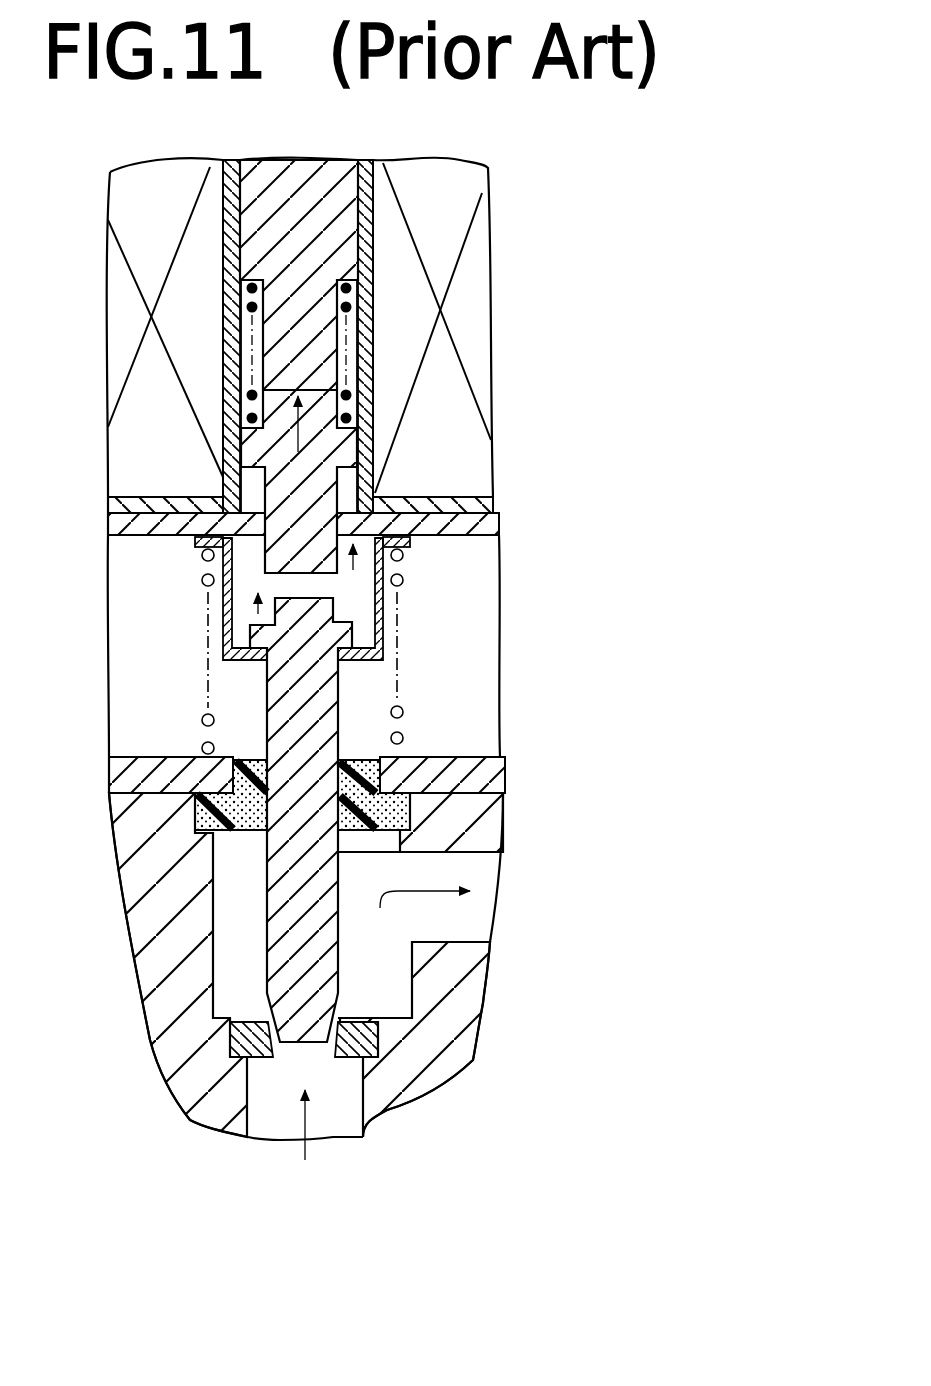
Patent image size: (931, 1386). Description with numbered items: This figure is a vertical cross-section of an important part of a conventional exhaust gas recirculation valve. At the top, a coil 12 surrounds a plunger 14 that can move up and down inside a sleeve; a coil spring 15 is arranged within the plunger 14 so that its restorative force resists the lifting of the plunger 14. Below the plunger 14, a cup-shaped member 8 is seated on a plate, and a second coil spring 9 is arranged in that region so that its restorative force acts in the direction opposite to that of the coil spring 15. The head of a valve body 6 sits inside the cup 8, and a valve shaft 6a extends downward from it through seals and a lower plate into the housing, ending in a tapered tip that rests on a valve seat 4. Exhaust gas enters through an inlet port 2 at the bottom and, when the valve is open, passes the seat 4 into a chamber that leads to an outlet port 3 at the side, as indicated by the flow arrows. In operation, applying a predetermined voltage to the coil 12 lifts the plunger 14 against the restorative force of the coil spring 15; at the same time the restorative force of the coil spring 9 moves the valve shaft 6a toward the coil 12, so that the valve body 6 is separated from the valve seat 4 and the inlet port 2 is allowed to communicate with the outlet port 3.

The inlet port 2 is at (273, 1117).
The outlet port 3 is at (470, 911).
The valve seat 4 is at (340, 1057).
The valve body 6 is at (343, 977).
The valve shaft 6a is at (330, 702).
The cup member 8 is at (383, 627).
The coil spring 9 is at (397, 576).
The coil 12 is at (467, 282).
The plunger 14 is at (310, 497).
The coil spring 15 is at (345, 390).